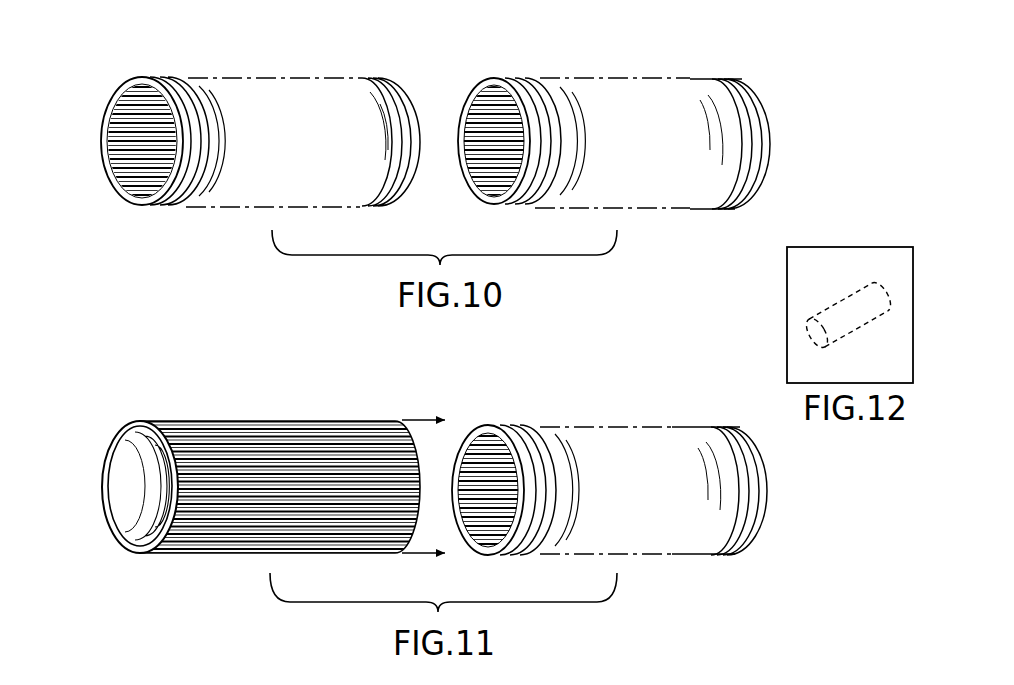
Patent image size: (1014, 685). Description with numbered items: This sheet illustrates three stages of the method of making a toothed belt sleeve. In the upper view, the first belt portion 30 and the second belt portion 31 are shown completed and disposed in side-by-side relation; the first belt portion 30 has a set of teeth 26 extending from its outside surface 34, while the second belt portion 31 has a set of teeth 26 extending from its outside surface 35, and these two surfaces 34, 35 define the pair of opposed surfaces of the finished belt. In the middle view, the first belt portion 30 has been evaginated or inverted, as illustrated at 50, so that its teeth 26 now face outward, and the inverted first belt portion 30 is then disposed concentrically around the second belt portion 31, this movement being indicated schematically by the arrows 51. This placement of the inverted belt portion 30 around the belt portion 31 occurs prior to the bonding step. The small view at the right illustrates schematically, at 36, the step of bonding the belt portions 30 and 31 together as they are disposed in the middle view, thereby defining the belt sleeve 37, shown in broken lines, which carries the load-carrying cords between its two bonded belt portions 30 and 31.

In FIG. 10, the teeth 26 is at (133, 150).
In FIG. 11, the teeth 26 is at (148, 417).
In FIG. 10, the first belt portion 30 is at (288, 68).
In FIG. 11, the first belt portion 30 is at (245, 415).
In FIG. 10, the second belt portion 31 is at (648, 66).
In FIG. 11, the second belt portion 31 is at (628, 422).
In FIG. 10, the outside surface 34 is at (123, 117).
In FIG. 11, the outside surface 34 is at (207, 512).
In FIG. 10, the outside surface 35 is at (478, 115).
In FIG. 11, the outside surface 35 is at (478, 465).
In FIG. 12, the bonding step 36 is at (866, 245).
In FIG. 12, the belt sleeve 37 is at (830, 305).
In FIG. 11, the inverting step 50 is at (322, 405).
In FIG. 11, the arrows 51 is at (415, 420).